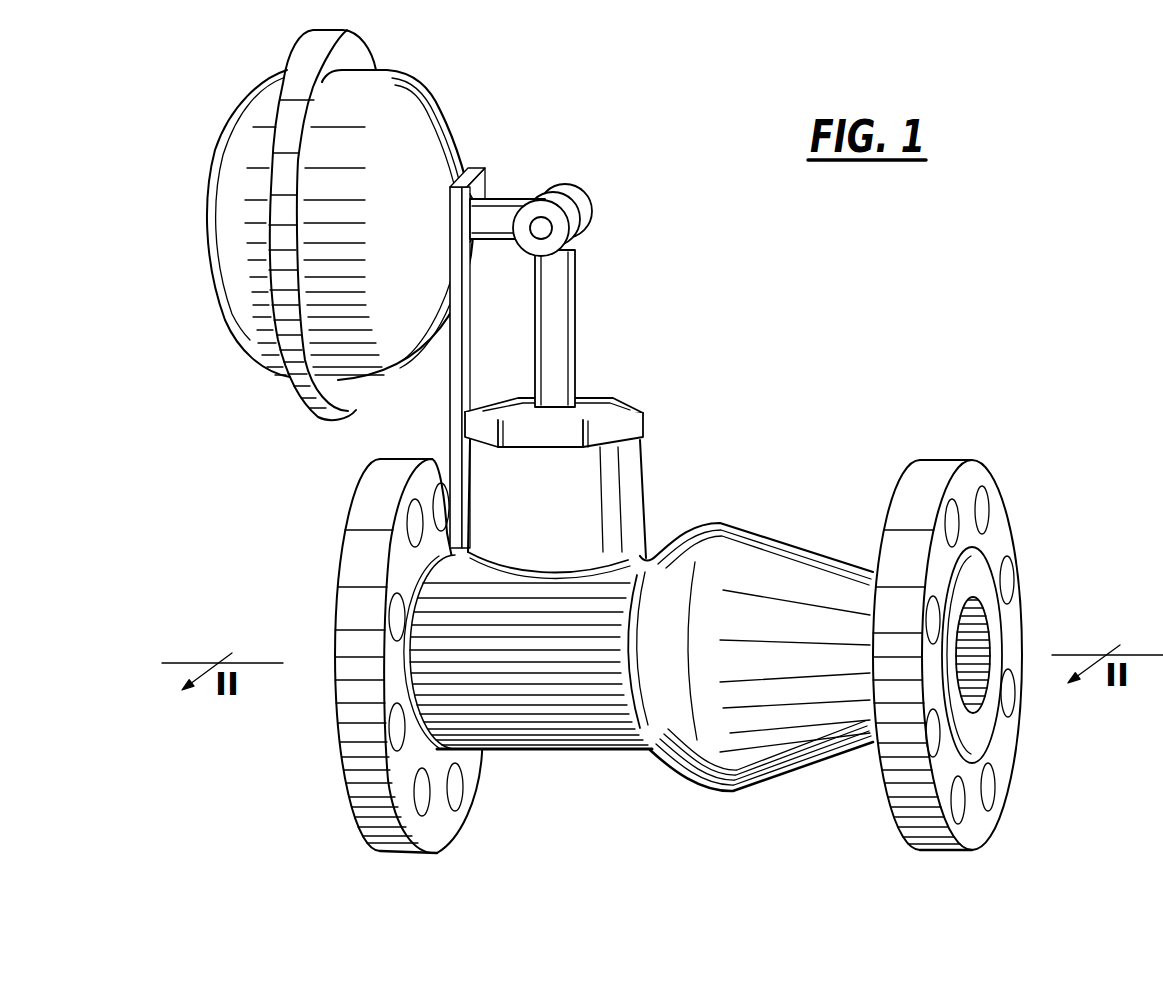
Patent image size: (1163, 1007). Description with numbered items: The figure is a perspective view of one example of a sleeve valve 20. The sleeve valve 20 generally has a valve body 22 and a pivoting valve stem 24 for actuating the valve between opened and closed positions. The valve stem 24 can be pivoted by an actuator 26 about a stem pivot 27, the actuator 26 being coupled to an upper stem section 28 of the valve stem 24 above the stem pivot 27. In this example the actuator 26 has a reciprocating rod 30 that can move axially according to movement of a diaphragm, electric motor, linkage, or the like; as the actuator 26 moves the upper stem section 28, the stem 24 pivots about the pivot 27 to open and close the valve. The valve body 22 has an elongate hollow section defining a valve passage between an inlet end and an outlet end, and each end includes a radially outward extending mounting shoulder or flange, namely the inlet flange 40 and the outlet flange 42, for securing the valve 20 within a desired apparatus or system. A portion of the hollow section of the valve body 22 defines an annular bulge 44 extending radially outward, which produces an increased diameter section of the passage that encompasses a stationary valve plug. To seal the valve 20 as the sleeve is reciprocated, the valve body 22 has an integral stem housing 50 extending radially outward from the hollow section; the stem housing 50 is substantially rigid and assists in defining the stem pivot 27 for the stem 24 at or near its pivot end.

The sleeve valve 20 is at (972, 282).
The valve body 22 is at (583, 752).
The valve stem 24 is at (568, 281).
The actuator 26 is at (422, 138).
The stem pivot 27 is at (666, 410).
The upper stem section 28 is at (553, 273).
The reciprocating rod 30 is at (502, 218).
The inlet flange 40 is at (403, 462).
The outlet flange 42 is at (932, 472).
The annular bulge 44 is at (733, 533).
The stem housing 50 is at (587, 473).